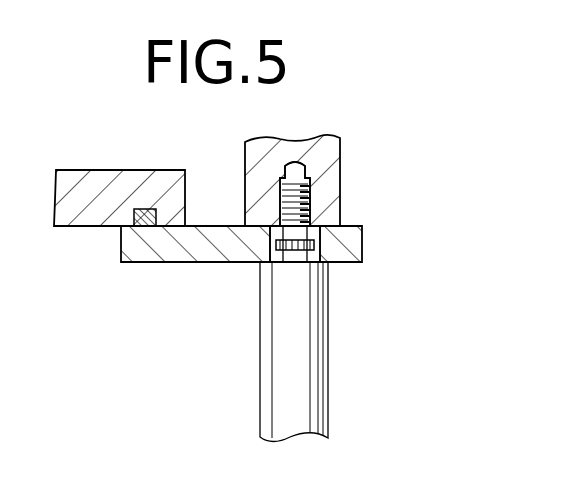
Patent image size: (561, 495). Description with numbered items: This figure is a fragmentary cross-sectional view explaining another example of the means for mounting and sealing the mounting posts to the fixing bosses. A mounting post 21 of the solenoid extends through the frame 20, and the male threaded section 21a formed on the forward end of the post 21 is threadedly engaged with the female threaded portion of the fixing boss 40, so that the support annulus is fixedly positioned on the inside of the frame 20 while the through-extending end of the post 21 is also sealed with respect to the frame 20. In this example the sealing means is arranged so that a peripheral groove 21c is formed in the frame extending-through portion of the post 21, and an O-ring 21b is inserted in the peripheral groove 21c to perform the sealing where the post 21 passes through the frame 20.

The fixing boss 40 is at (250, 163).
The frame 20 is at (146, 262).
The mounting post 21 is at (277, 358).
The male threaded section 21a is at (310, 206).
The O-ring 21b is at (260, 262).
The peripheral groove 21c is at (303, 252).